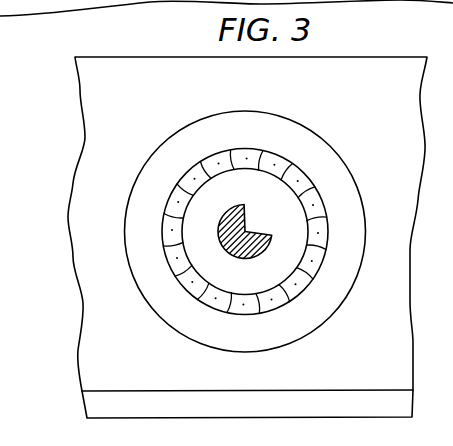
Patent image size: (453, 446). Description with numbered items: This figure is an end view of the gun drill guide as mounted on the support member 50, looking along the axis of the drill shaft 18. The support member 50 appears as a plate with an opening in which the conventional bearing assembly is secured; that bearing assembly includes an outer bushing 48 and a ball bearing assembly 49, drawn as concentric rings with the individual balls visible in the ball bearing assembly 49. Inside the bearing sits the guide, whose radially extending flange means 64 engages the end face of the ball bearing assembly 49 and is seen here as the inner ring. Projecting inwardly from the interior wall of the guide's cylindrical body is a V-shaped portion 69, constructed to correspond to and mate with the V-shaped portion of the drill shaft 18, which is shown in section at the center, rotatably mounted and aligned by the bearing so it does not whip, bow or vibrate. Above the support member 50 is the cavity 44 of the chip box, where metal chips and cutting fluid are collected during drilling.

The cavity 44 is at (162, 0).
The support member 50 is at (102, 109).
The bushing 48 is at (165, 302).
The ball bearing assembly 49 is at (200, 300).
The flange means 64 is at (263, 192).
The V-shaped portion 69 is at (257, 222).
The drill shaft 18 is at (237, 250).